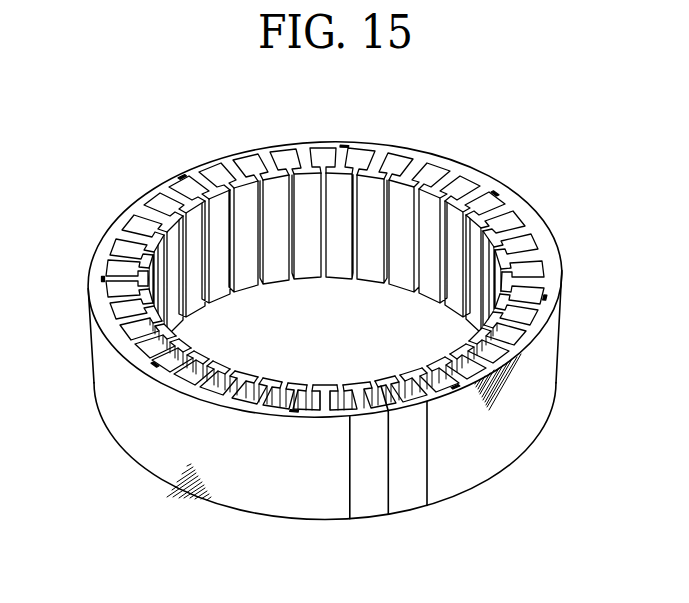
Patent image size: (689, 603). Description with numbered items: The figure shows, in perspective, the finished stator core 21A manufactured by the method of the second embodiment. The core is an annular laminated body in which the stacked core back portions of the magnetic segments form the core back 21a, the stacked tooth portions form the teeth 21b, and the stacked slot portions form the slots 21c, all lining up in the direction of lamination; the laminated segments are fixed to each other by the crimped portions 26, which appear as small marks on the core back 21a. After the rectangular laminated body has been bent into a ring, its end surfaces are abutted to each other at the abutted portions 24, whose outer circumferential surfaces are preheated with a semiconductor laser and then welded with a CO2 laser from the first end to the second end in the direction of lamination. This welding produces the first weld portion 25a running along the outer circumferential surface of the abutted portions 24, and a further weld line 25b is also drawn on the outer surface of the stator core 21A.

The stator core 21A is at (97, 134).
The core back 21a is at (422, 154).
The teeth 21b is at (441, 179).
The slots 21c is at (456, 181).
The crimped portions 26 is at (499, 194).
The abutted portions 24 is at (382, 386).
The first weld portion 25a is at (389, 486).
The joint line 25b is at (350, 490).